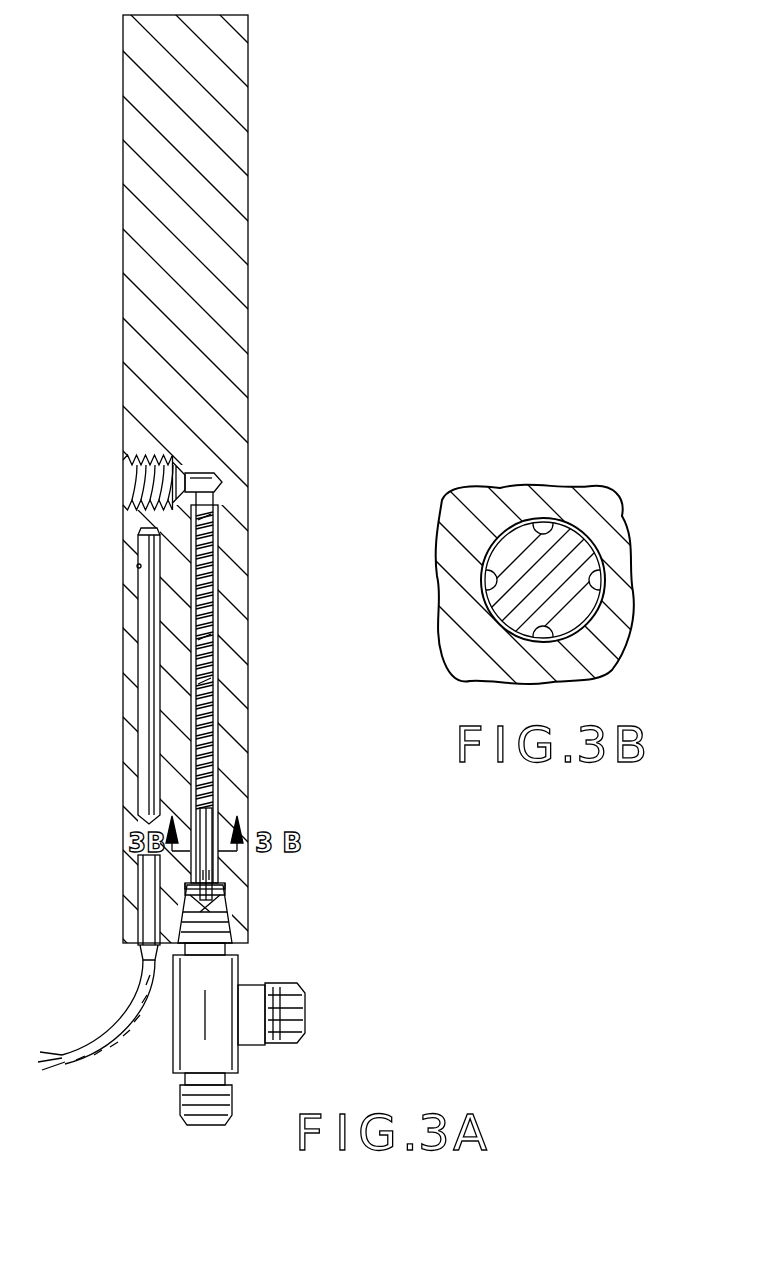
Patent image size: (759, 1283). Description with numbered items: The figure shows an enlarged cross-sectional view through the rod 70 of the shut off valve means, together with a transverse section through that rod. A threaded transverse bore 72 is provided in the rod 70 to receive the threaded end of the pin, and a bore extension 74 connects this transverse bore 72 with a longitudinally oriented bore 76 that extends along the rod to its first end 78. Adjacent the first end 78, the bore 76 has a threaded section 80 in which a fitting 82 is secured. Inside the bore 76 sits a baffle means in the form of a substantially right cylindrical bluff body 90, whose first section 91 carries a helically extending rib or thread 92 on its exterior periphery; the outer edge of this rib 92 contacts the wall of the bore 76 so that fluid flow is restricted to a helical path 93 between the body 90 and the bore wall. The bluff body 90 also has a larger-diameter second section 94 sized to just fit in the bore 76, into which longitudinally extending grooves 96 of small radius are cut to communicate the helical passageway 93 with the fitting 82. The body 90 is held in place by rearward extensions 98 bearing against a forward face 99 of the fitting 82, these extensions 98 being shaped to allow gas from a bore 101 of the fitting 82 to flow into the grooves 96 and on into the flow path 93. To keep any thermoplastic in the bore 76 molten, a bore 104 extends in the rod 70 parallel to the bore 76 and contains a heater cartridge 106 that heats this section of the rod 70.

In FIG. 3A, the rod 70 is at (250, 155).
In FIG. 3B, the rod 70 is at (481, 492).
In FIG. 3A, the threaded transverse bore 72 is at (127, 483).
In FIG. 3A, the bore extension 74 is at (206, 470).
In FIG. 3A, the longitudinally oriented bore 76 is at (218, 580).
In FIG. 3B, the longitudinally oriented bore 76 is at (593, 552).
In FIG. 3A, the first end 78 is at (125, 946).
In FIG. 3A, the threaded section 80 is at (230, 927).
In FIG. 3A, the fitting 82 is at (244, 1027).
In FIG. 3A, the bluff body 90 is at (212, 705).
In FIG. 3A, the first section 91 is at (204, 546).
In FIG. 3A, the helically extending rib 92 is at (213, 637).
In FIG. 3A, the helical path 93 is at (215, 680).
In FIG. 3A, the second section 94 is at (215, 822).
In FIG. 3B, the second section 94 is at (560, 595).
In FIG. 3A, the longitudinally extending grooves 96 is at (205, 873).
In FIG. 3B, the longitudinally extending grooves 96 is at (547, 526).
In FIG. 3A, the rearward extensions 98 is at (190, 889).
In FIG. 3A, the forward face 99 is at (222, 888).
In FIG. 3A, the bore 101 is at (226, 902).
In FIG. 3A, the bore 104 is at (137, 566).
In FIG. 3A, the heater cartridge 106 is at (150, 670).